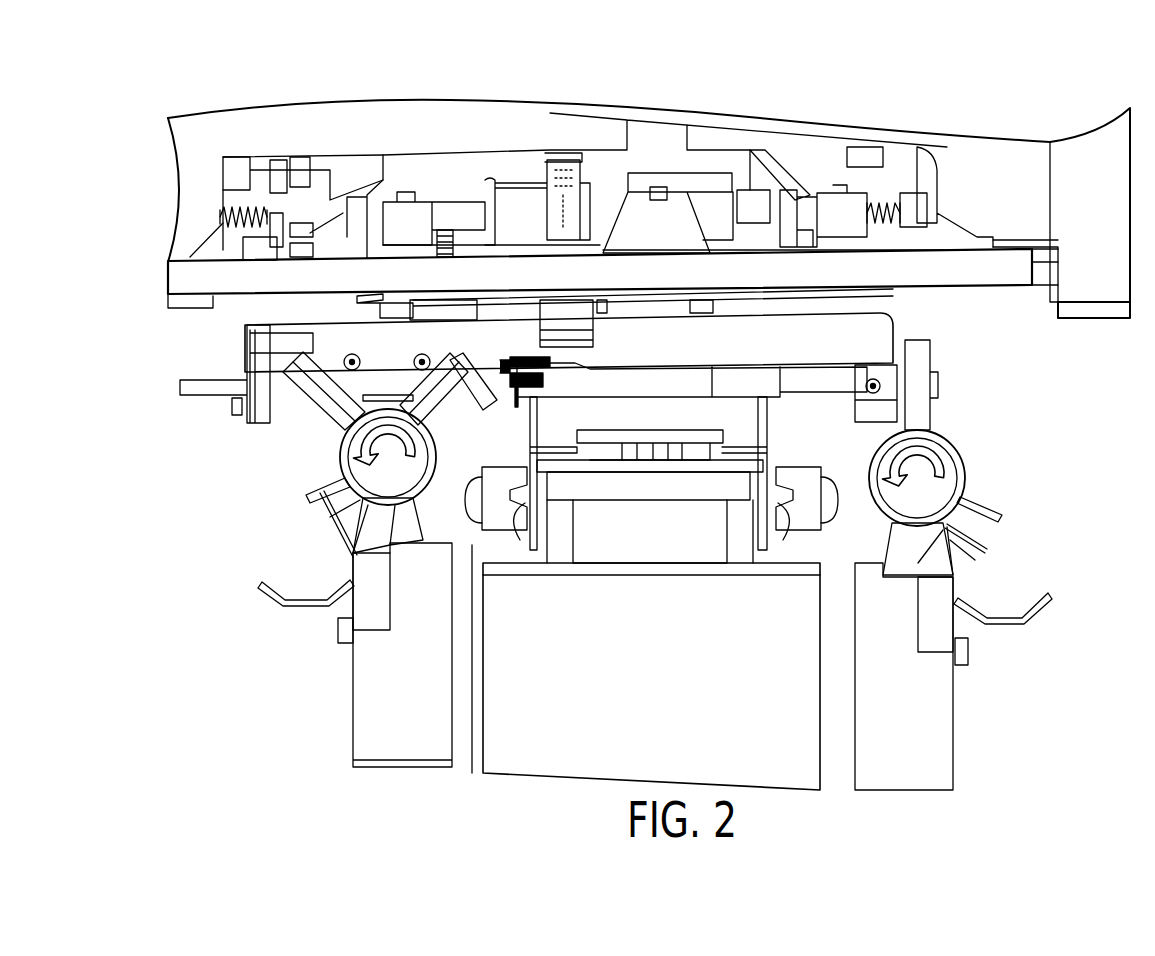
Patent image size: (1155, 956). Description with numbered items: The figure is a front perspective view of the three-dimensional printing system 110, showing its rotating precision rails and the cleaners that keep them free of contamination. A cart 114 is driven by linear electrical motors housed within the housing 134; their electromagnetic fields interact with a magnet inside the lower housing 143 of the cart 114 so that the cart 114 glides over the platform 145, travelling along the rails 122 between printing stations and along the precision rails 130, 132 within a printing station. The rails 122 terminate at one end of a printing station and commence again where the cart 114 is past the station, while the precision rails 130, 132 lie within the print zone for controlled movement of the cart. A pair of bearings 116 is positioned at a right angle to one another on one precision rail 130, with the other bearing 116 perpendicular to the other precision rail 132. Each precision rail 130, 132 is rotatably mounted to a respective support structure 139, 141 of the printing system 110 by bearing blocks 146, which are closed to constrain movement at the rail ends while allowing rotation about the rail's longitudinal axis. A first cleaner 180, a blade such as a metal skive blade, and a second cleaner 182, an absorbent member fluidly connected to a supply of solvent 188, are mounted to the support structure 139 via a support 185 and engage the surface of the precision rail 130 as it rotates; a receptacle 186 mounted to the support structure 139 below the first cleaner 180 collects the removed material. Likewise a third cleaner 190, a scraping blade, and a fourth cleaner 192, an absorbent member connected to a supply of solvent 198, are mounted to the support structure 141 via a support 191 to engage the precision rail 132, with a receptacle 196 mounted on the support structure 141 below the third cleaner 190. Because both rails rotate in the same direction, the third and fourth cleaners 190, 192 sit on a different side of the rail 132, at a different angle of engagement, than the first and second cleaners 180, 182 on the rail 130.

The printing system 110 is at (160, 98).
The cart 114 is at (898, 328).
The bearings 116 is at (347, 424).
The rails 122 is at (523, 507).
The precision rail 130 is at (341, 458).
The precision rail 132 is at (955, 445).
The housing 134 is at (563, 757).
The support structure 139 is at (413, 755).
The support structure 141 is at (930, 773).
The lower housing 143 is at (654, 557).
The platform 145 is at (588, 573).
The bearing block 146 is at (368, 549).
The first cleaner 180 is at (310, 494).
The second cleaner 182 is at (332, 532).
The support 185 is at (330, 512).
The receptacle 186 is at (270, 592).
The supply of solvent 188 is at (337, 627).
The third cleaner 190 is at (1002, 516).
The support 191 is at (973, 548).
The fourth cleaner 192 is at (968, 535).
The receptacle 196 is at (1047, 605).
The supply of solvent 198 is at (972, 655).